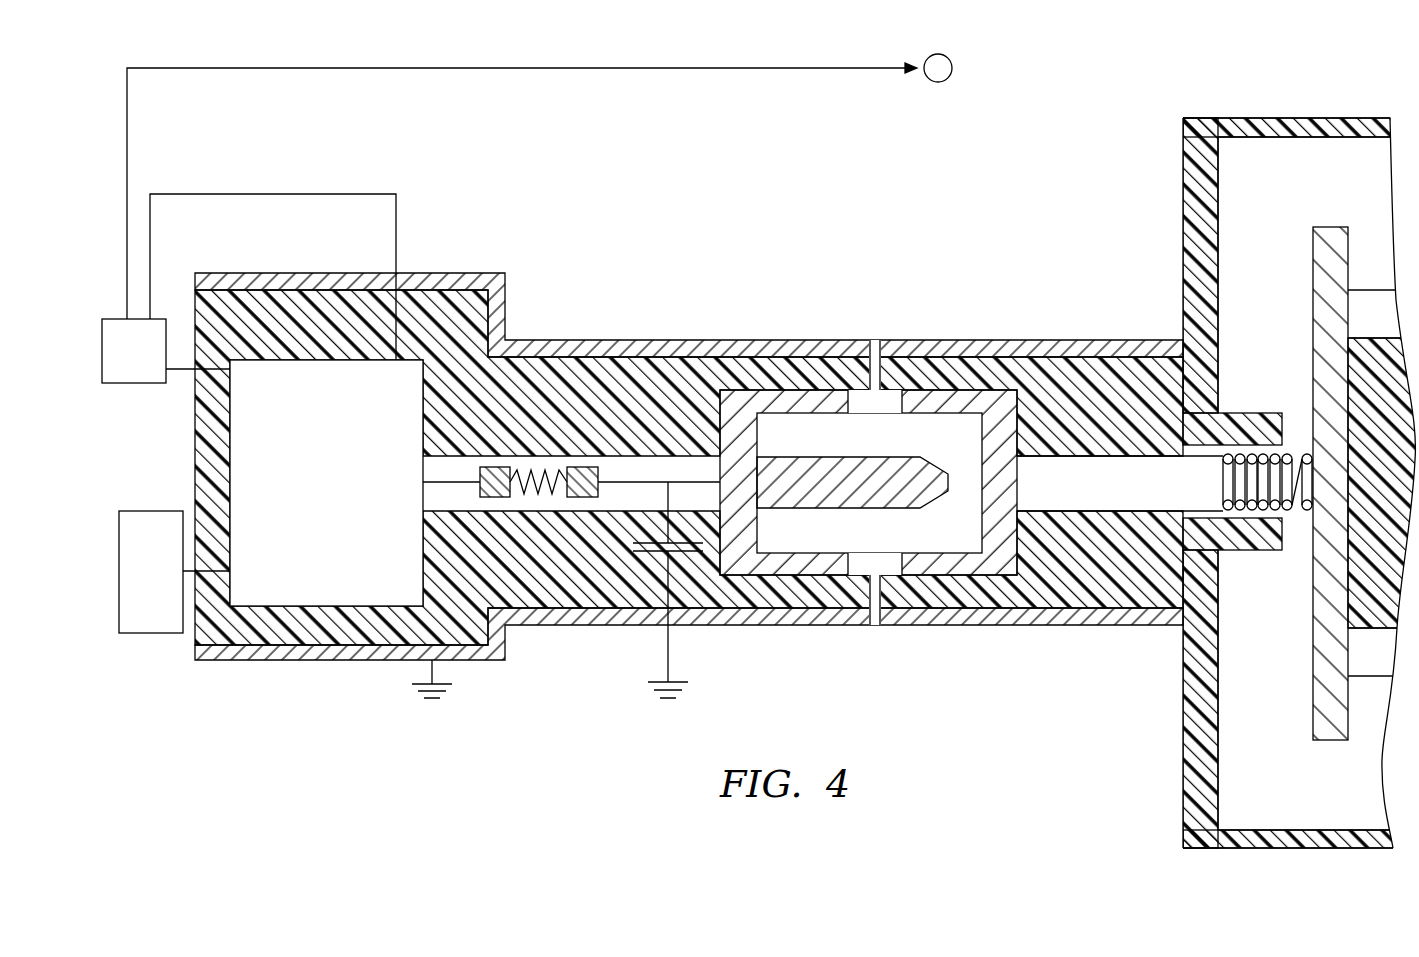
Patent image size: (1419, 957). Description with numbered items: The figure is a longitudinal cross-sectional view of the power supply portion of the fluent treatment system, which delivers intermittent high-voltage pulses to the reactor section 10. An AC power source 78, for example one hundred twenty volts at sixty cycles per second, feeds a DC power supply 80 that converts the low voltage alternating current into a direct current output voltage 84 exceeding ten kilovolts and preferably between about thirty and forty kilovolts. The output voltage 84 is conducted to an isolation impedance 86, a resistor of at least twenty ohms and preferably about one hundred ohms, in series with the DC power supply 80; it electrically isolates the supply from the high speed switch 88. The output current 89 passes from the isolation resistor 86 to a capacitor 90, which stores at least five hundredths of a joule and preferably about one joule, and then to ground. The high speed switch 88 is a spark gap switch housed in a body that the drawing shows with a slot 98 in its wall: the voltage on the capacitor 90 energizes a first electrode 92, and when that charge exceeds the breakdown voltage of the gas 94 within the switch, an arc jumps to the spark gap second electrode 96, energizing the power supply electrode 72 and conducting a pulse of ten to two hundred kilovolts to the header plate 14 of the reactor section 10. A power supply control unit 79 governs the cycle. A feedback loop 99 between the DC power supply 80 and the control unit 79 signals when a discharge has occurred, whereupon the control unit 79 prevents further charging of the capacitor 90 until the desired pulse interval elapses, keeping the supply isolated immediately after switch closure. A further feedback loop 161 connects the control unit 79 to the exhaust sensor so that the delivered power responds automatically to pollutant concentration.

The reactor section 10 is at (1296, 107).
The header plate 14 is at (1330, 728).
The power supply electrode 72 is at (1068, 489).
The AC power source 78 is at (137, 585).
The power supply control unit 79 is at (120, 365).
The DC power supply 80 is at (312, 485).
The direct current output voltage 84 is at (450, 484).
The isolation impedance 86 is at (495, 467).
The high speed switch 88 is at (877, 450).
The output current 89 is at (600, 497).
The capacitor 90 is at (640, 553).
The first electrode 92 is at (800, 508).
The gas 94 is at (937, 540).
The spark gap second electrode 96 is at (1010, 420).
The slot 98 is at (875, 625).
The feedback loop 99 is at (398, 232).
The feedback loop 161 is at (606, 68).